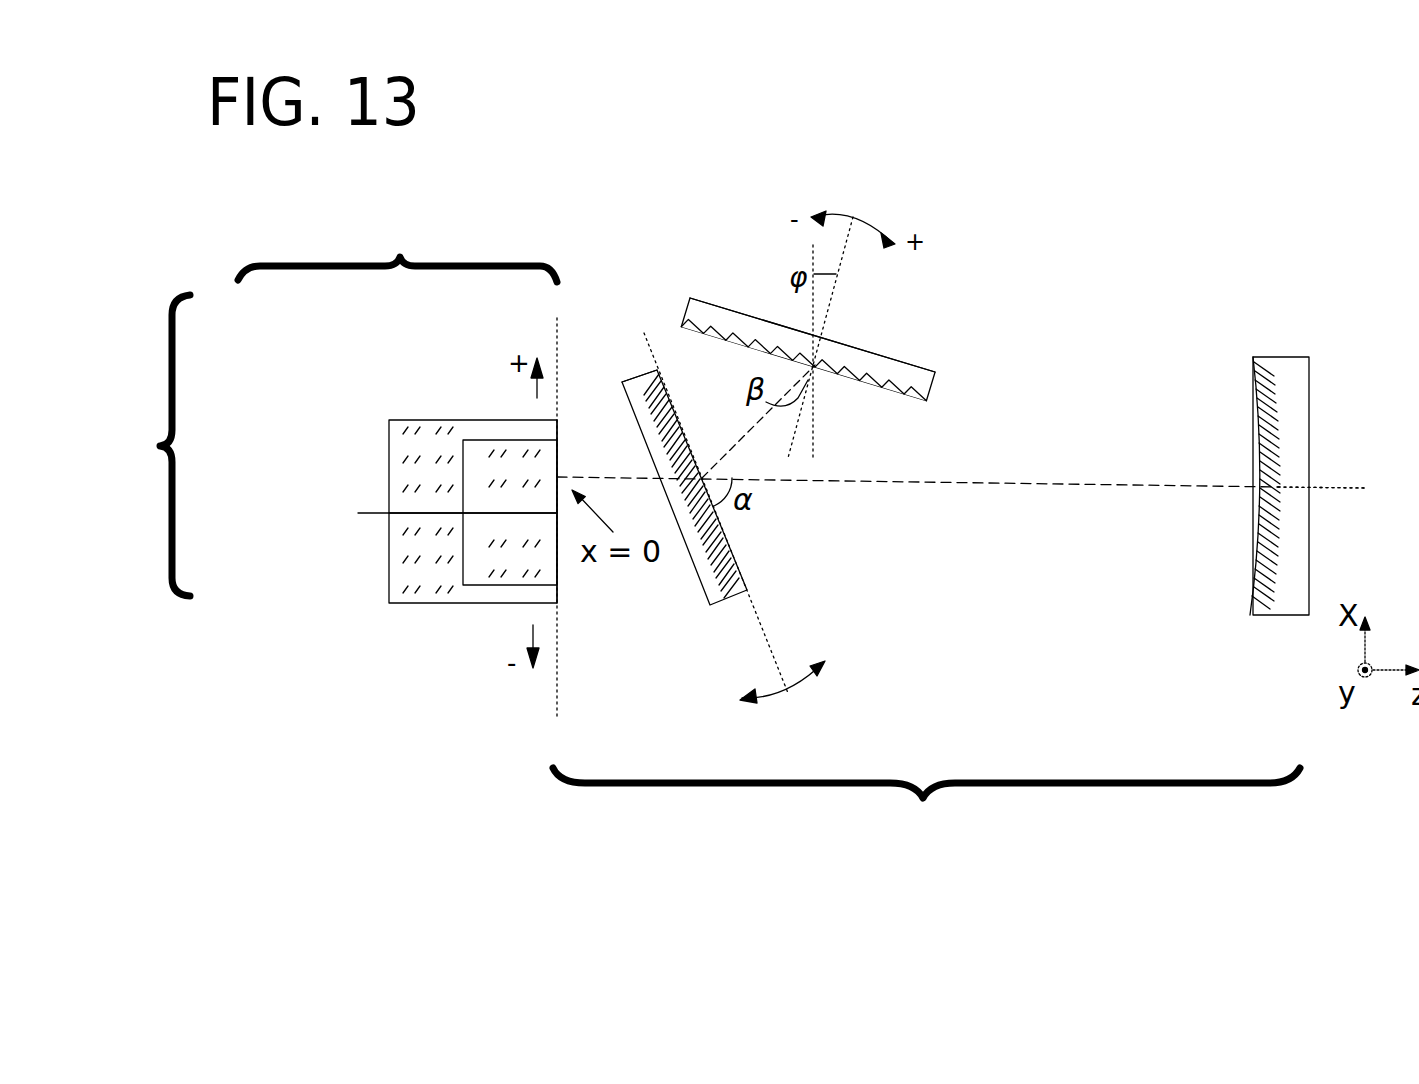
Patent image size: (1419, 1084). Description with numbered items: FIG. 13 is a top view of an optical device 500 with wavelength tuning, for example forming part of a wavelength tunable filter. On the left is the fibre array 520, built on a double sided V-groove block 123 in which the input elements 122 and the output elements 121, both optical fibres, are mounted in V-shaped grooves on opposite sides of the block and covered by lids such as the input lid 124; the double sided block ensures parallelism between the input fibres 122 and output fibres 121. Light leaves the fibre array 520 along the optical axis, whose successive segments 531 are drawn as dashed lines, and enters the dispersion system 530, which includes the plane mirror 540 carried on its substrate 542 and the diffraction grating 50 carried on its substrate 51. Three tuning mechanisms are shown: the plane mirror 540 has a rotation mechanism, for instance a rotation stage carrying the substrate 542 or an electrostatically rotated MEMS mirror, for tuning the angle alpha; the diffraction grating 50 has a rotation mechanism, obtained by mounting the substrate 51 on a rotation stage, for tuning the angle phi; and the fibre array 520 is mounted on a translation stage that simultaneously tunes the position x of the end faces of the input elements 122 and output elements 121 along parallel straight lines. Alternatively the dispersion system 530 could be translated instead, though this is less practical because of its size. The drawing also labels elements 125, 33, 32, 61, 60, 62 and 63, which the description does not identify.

The optical device 500 is at (139, 445).
The fibre array 520 is at (397, 249).
The dispersion system 530 is at (926, 809).
The output elements 121 is at (358, 513).
The input elements 122 is at (358, 513).
The double sided V-groove block 123 is at (422, 598).
The input lid 124 is at (497, 577).
The emission end face 125 is at (557, 583).
The plane mirror 540 is at (737, 555).
The substrate of the plane mirror 542 is at (636, 375).
The diffraction grating 50 is at (741, 330).
The grating normal 33 is at (835, 318).
The substrate of the diffraction grating 51 is at (905, 370).
The segments of the optical axis 531 is at (760, 427).
The optical axis 32 is at (1093, 410).
The detector 61 is at (1293, 378).
The detector light receiving surface 60 is at (1257, 543).
The detector lens surface 62 is at (1263, 580).
The detector axis 63 is at (1340, 486).